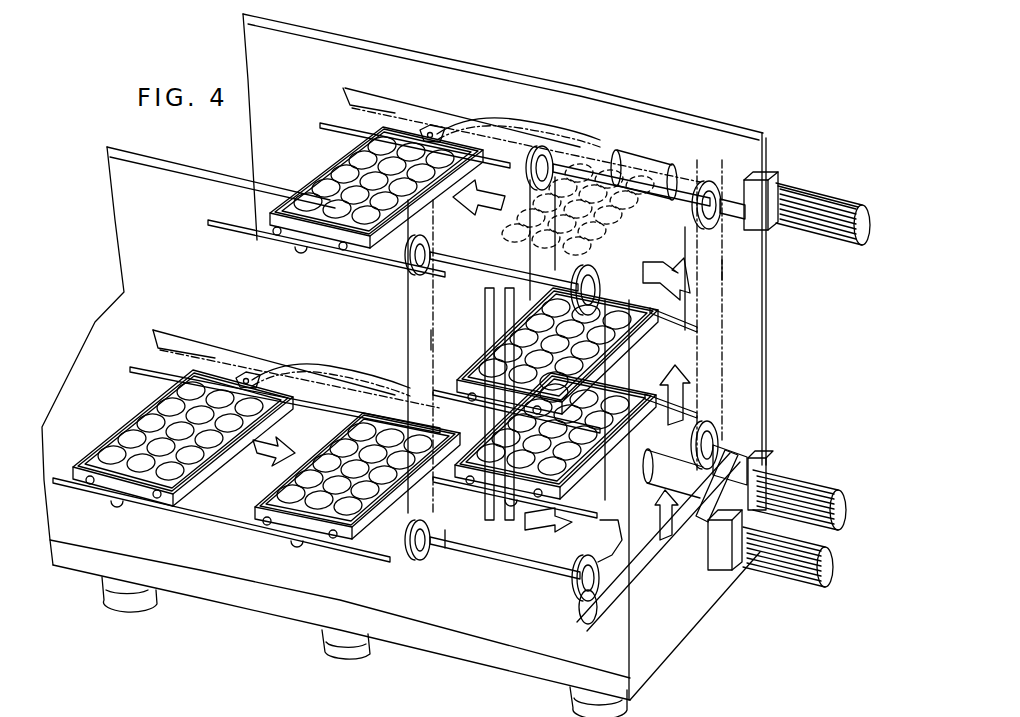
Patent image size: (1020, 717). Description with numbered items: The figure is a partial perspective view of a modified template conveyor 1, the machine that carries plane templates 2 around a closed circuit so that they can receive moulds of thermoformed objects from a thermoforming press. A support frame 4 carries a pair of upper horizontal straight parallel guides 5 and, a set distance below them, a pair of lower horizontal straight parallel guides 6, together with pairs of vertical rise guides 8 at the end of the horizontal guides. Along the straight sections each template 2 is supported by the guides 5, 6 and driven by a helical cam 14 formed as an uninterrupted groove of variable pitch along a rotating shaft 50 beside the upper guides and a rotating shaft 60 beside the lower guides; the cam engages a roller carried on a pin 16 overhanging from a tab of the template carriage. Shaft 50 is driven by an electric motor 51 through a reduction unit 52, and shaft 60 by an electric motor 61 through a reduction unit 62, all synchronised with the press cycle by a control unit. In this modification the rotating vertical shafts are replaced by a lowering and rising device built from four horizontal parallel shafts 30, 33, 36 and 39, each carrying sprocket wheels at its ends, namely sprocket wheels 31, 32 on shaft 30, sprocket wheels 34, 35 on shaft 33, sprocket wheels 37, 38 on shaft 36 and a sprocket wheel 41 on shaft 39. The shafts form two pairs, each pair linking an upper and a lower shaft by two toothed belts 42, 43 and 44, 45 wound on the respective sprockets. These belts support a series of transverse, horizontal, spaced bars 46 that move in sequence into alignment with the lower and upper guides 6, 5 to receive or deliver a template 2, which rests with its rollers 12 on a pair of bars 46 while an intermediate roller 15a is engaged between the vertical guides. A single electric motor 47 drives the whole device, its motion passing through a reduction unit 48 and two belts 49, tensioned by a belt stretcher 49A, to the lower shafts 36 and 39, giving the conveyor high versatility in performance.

The template conveyor 1 is at (764, 122).
The plane template 2 is at (267, 486).
The support frame 4 is at (656, 666).
The upper horizontal straight parallel guides 5 is at (240, 223).
The lower horizontal straight parallel guides 6 is at (147, 377).
The vertical rise guides 8 is at (494, 515).
The rollers 12 is at (272, 236).
The helical groove (cam) 14 is at (455, 118).
The intermediate roller 15a is at (300, 250).
The pin 16 is at (425, 130).
The horizontal shaft 30 is at (586, 170).
The sprocket wheel 31 is at (545, 143).
The sprocket wheel 32 is at (712, 180).
The horizontal shaft 33 is at (440, 266).
The sprocket wheel 34 is at (417, 282).
The sprocket wheel 35 is at (598, 282).
The horizontal shaft 36 is at (448, 545).
The sprocket wheel 37 is at (413, 563).
The sprocket wheel 38 is at (577, 595).
The horizontal shaft 39 is at (670, 438).
The sprocket wheel 41 is at (720, 430).
The toothed belt 42 is at (470, 240).
The toothed belt 43 is at (724, 269).
The toothed belt 44 is at (430, 340).
The toothed belt 45 is at (543, 571).
The transverse bars 46 is at (457, 560).
The electric motor 47 is at (797, 566).
The reduction unit 48 is at (733, 570).
The belts 49 is at (670, 572).
The belt stretcher 49A is at (622, 582).
The shaft 50 is at (652, 160).
The electric motor 51 is at (835, 232).
The reduction unit 52 is at (769, 184).
The shaft 60 is at (211, 352).
The electric motor 61 is at (813, 482).
The reduction unit 62 is at (755, 466).